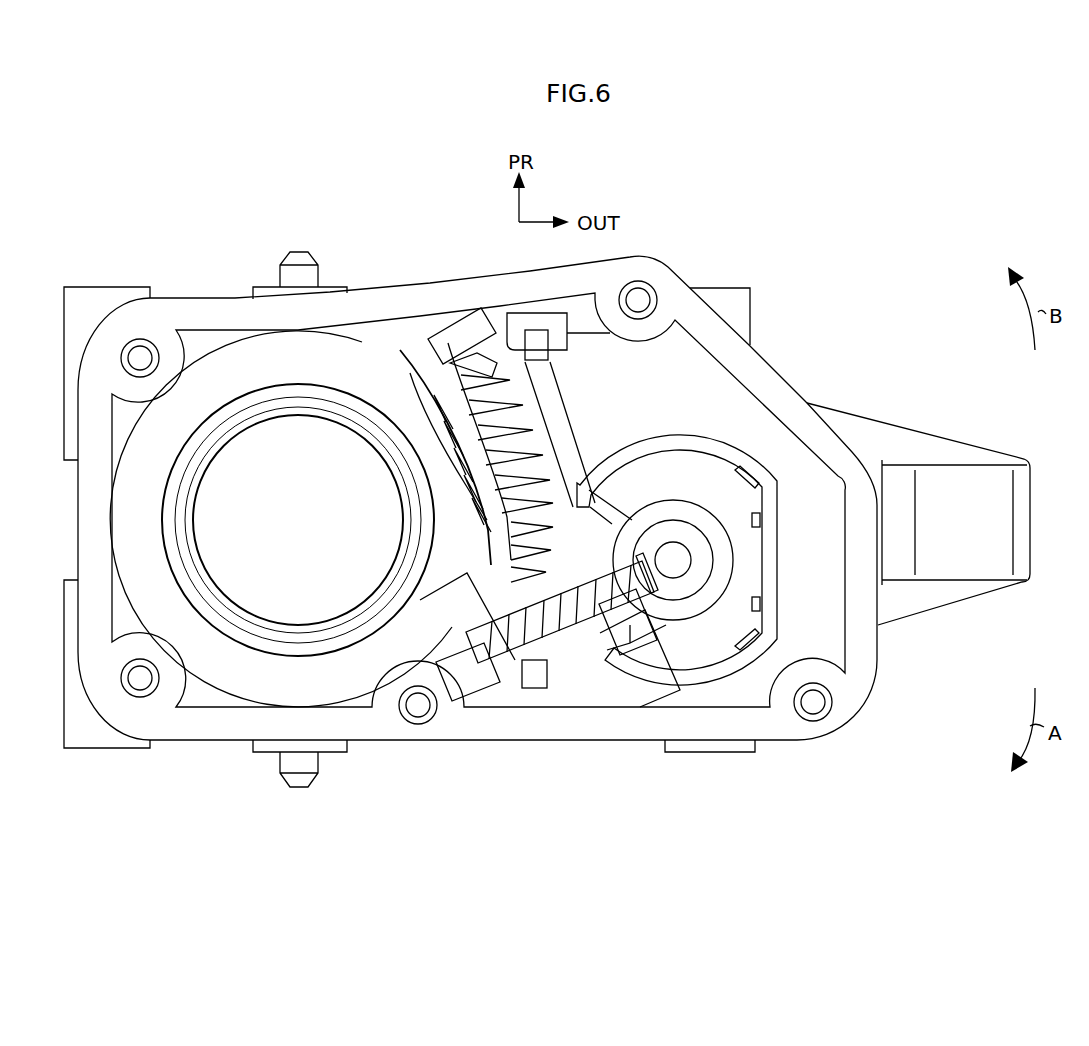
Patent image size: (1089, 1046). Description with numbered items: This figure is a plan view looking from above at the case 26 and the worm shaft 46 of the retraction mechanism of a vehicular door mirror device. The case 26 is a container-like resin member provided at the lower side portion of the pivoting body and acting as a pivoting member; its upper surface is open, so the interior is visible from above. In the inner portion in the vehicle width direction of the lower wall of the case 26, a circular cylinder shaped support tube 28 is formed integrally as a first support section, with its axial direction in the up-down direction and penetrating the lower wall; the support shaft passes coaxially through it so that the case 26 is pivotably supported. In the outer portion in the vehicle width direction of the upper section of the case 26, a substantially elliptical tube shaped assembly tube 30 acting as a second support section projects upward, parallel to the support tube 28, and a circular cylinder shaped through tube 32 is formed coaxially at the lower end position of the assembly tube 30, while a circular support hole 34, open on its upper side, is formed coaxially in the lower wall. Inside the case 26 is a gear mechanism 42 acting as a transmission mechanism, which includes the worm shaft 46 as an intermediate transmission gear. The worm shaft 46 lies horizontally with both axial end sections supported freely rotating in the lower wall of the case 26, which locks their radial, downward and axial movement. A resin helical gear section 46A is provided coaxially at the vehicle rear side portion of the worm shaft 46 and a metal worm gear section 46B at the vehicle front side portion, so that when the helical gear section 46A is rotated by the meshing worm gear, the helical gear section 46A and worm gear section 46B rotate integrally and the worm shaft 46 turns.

The case 26 is at (476, 271).
The support tube 28 is at (281, 385).
The assembly tube 30 is at (670, 433).
The through tube 32 is at (673, 500).
The support hole 34 is at (682, 569).
The gear mechanism 42 is at (455, 454).
The worm shaft 46 is at (476, 550).
The helical gear section 46A is at (528, 657).
The worm gear section 46B is at (560, 445).